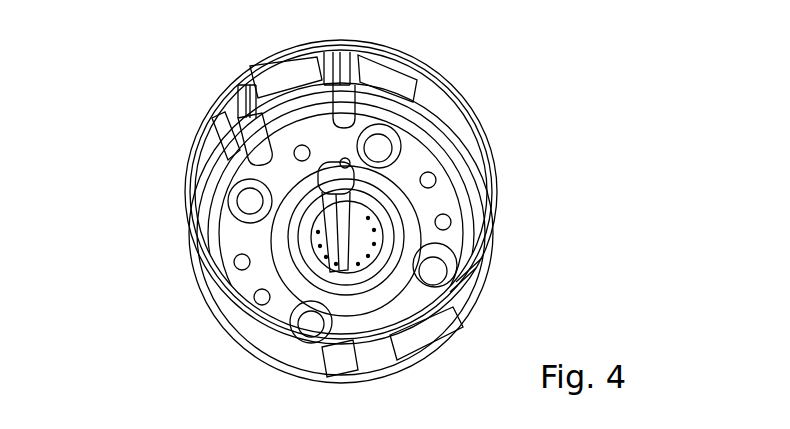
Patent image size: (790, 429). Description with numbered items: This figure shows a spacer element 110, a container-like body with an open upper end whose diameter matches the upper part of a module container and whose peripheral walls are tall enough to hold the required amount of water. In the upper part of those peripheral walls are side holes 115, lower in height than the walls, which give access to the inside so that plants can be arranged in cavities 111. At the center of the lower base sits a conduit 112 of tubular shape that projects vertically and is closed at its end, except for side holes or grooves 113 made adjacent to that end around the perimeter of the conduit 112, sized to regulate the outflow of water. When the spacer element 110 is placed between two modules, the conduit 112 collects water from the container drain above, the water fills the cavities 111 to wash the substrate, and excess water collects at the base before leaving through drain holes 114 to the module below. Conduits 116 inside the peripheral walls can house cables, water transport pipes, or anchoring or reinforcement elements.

The spacer element 110 is at (516, 227).
The cavities 111 is at (395, 146).
The conduit 112 is at (322, 189).
The side holes or grooves 113 is at (336, 274).
The drain holes 114 is at (225, 262).
The side holes 115 is at (420, 91).
The conduits 116 is at (226, 90).